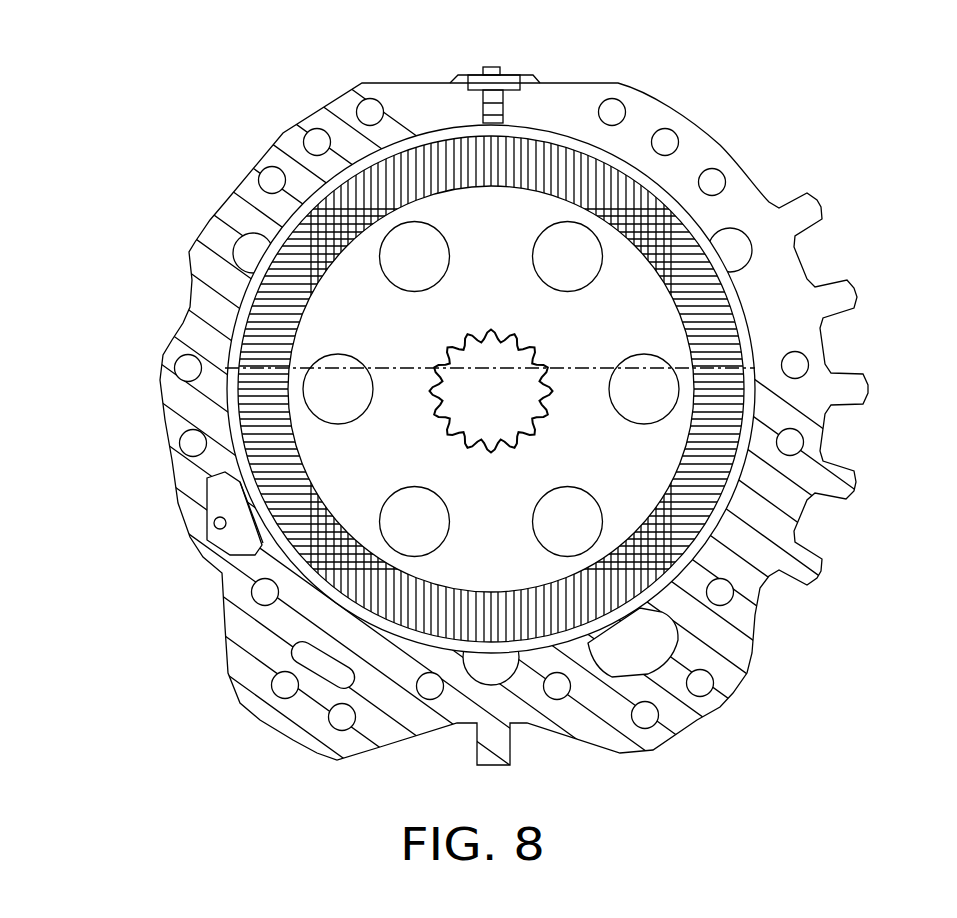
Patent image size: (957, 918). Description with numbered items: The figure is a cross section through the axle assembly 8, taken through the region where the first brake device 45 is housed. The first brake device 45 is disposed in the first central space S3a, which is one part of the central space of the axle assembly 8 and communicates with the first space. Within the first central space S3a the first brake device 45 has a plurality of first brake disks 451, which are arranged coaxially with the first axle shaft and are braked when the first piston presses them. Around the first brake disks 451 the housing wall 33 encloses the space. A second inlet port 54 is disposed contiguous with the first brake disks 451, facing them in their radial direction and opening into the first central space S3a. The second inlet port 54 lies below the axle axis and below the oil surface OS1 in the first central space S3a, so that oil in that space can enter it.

The axle assembly 8 is at (512, 459).
The housing 33 is at (333, 118).
The first brake device 45 is at (567, 137).
The first brake disks 451 is at (433, 158).
The oil surface OS1 is at (598, 368).
The first central space S3a is at (490, 673).
The second inlet port 54 is at (640, 645).